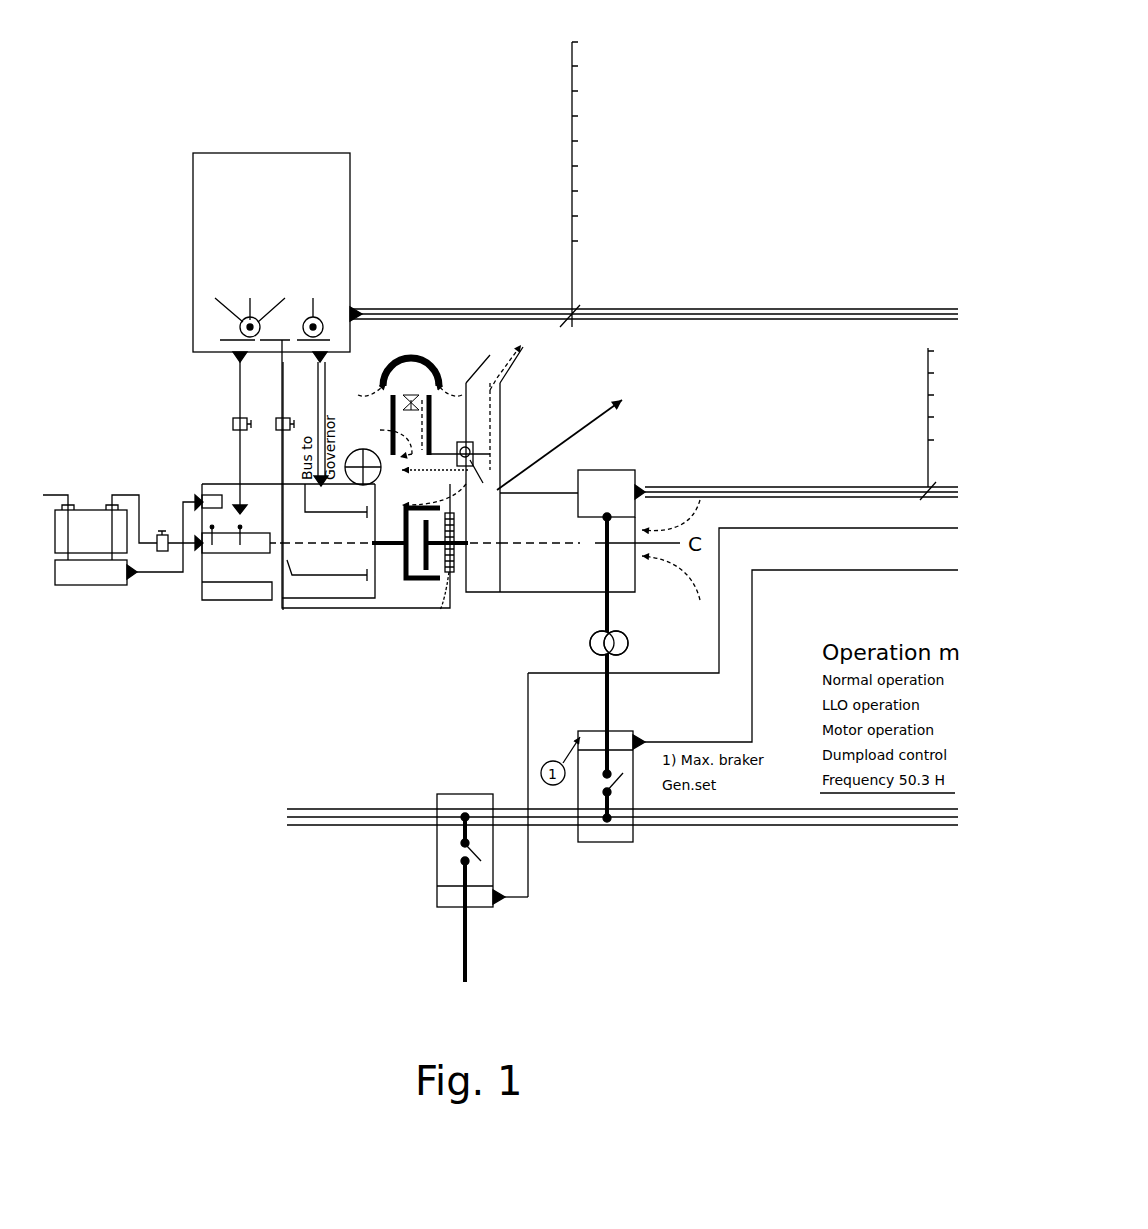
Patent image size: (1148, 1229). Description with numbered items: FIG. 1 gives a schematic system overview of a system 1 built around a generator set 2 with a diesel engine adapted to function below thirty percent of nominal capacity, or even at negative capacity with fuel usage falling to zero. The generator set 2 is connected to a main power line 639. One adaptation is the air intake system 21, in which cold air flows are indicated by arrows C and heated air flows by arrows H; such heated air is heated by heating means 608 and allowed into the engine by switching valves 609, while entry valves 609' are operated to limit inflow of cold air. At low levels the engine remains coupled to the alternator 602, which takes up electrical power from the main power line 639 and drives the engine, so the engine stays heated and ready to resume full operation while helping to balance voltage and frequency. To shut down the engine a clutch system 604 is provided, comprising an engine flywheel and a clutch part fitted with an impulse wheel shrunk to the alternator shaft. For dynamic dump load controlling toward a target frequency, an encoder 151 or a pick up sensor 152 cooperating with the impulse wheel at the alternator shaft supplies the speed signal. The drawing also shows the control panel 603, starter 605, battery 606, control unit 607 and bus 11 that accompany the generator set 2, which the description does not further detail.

The system 1 is at (764, 138).
The generator set 2 is at (431, 198).
The CAN bus 11 is at (723, 307).
The air intake system 21 is at (459, 365).
The encoder 151 is at (861, 909).
The pick up sensor 152 is at (462, 598).
The alternator 602 is at (617, 482).
The engine management control panel (EMCP) 603 is at (200, 300).
The clutch system 604 is at (425, 590).
The starter 605 is at (345, 462).
The battery and charger 606 is at (103, 522).
The control unit 607 is at (220, 598).
The heating means 608 is at (480, 440).
The switching valves 609 is at (636, 411).
The entry valves 609' is at (421, 353).
The main power line 639 is at (360, 808).